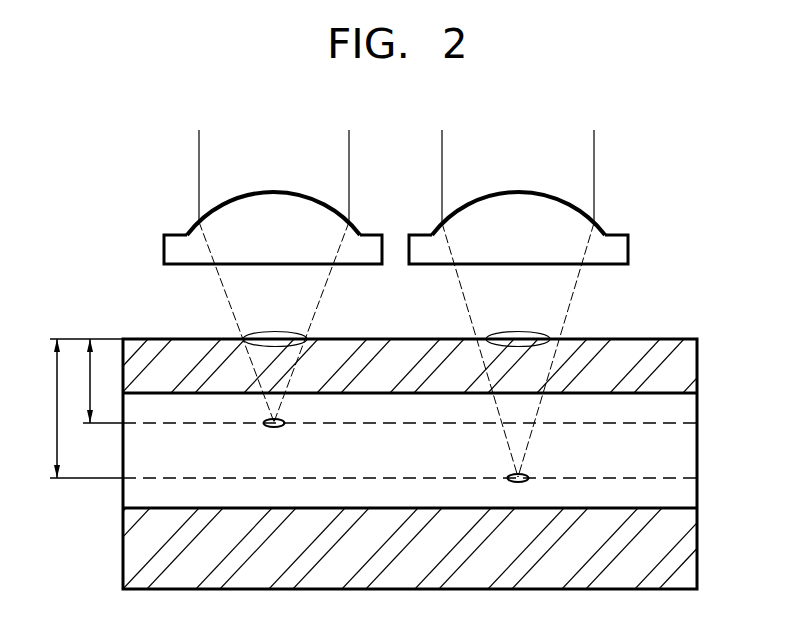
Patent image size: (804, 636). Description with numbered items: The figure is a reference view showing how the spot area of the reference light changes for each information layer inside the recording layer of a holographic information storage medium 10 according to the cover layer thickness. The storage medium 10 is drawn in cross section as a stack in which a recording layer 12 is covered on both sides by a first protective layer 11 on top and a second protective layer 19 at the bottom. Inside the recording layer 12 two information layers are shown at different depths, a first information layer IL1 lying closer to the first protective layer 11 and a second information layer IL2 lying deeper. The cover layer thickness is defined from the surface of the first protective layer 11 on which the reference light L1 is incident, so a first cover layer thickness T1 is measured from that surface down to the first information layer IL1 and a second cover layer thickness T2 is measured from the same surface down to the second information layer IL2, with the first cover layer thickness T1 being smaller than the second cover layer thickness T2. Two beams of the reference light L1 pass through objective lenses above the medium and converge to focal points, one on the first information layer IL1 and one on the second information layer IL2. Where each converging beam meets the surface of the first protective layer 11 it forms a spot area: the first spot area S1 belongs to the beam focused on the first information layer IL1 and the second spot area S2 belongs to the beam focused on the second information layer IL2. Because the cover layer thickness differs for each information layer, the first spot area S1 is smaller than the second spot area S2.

The holographic information storage medium 10 is at (714, 292).
The first protective layer 11 is at (692, 367).
The recording layer 12 is at (692, 502).
The second protective layer 19 is at (692, 553).
The first information layer IL1 is at (670, 423).
The second information layer IL2 is at (670, 478).
The reference light L1 is at (349, 167).
The first spot area S1 is at (275, 332).
The second spot area S2 is at (518, 332).
The first cover layer thickness T1 is at (93, 381).
The second cover layer thickness T2 is at (73, 408).